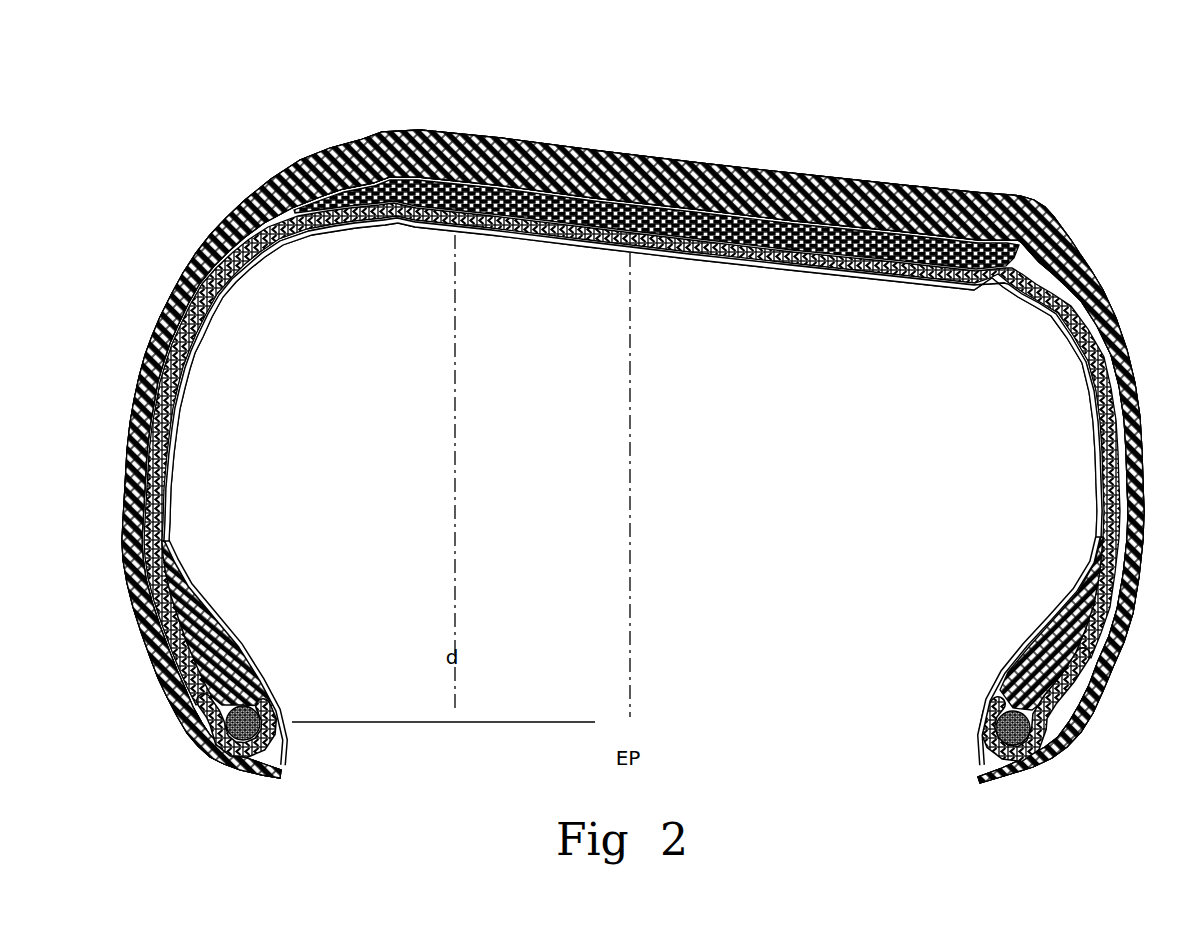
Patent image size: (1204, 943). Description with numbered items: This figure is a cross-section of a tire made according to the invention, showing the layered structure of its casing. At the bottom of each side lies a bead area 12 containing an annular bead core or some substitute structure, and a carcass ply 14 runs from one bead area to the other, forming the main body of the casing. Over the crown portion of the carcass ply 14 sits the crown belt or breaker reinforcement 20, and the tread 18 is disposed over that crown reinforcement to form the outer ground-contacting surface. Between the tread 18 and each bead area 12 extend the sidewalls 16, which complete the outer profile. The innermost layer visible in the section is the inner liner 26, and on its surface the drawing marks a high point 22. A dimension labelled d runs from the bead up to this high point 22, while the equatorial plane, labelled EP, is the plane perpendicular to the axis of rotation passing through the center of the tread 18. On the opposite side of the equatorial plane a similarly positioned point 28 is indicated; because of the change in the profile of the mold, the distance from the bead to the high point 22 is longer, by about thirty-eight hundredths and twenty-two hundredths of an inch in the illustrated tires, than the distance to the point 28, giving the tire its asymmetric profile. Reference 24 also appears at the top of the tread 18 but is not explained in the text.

The bead area 12 is at (243, 738).
The carcass ply 14 is at (127, 458).
The sidewall 16 is at (157, 315).
The tread 18 is at (786, 165).
The crown belt or breaker reinforcement 20 is at (567, 240).
The high point 22 is at (420, 226).
The tread centerline 24 is at (427, 128).
The inner liner 26 is at (177, 402).
The similarly positioned point 28 is at (840, 270).